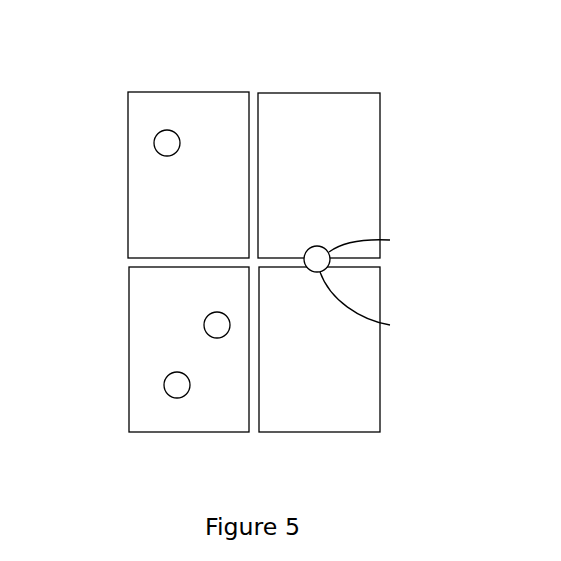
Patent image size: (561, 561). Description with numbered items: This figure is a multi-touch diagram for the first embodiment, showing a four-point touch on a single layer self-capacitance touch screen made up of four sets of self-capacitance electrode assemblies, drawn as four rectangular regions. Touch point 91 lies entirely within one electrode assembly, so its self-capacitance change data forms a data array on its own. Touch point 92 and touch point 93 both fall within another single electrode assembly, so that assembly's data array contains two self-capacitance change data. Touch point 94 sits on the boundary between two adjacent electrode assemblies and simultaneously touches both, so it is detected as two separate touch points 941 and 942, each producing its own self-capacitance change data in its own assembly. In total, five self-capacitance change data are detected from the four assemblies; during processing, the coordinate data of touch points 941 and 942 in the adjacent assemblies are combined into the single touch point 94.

The touch point 91 is at (168, 130).
The touch point 92 is at (204, 320).
The touch point 93 is at (176, 398).
The touch point 94 is at (308, 243).
The touch point 941 is at (390, 240).
The touch point 942 is at (390, 325).